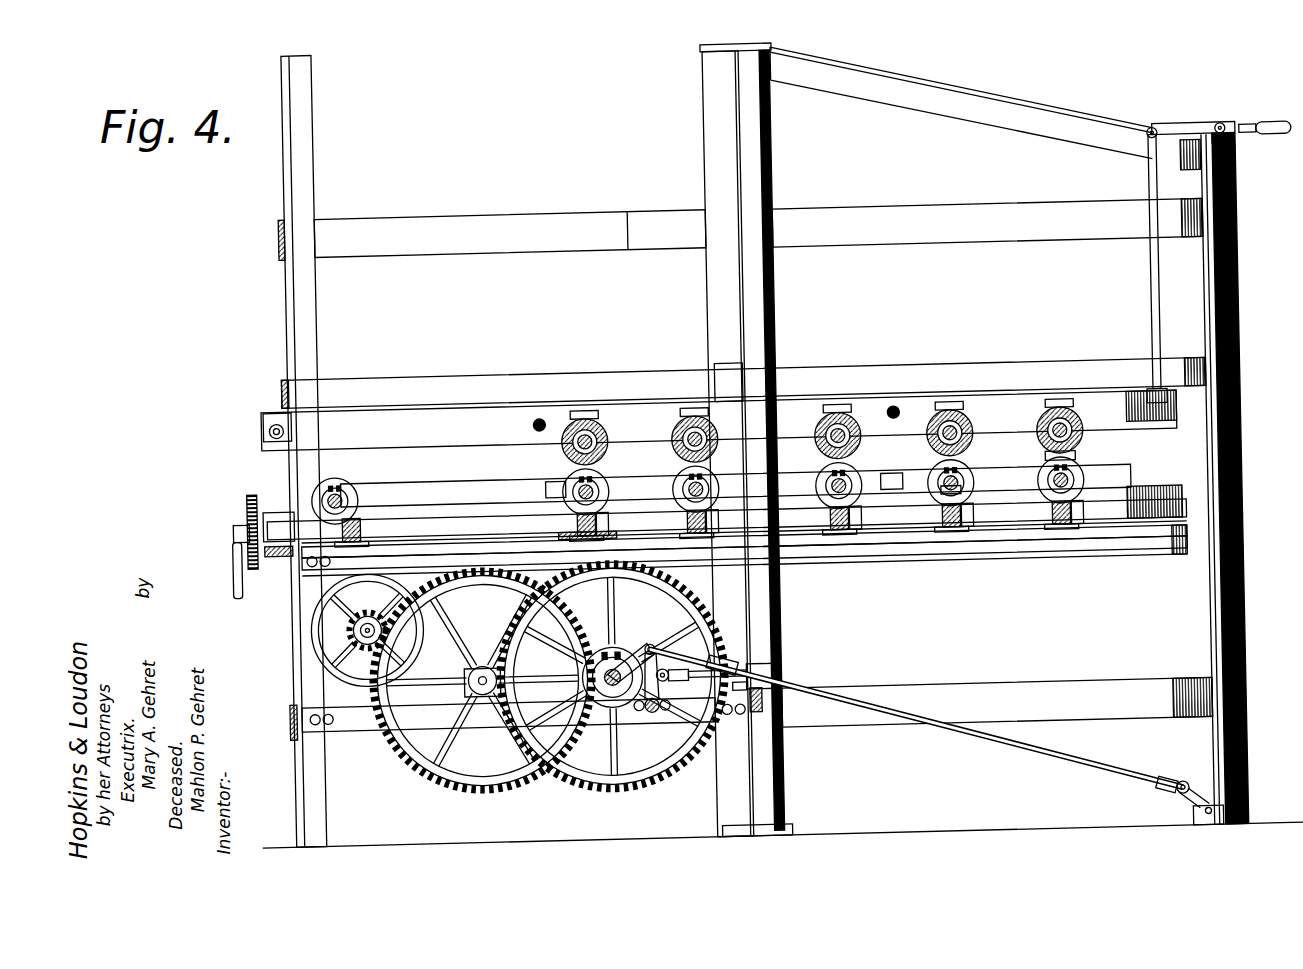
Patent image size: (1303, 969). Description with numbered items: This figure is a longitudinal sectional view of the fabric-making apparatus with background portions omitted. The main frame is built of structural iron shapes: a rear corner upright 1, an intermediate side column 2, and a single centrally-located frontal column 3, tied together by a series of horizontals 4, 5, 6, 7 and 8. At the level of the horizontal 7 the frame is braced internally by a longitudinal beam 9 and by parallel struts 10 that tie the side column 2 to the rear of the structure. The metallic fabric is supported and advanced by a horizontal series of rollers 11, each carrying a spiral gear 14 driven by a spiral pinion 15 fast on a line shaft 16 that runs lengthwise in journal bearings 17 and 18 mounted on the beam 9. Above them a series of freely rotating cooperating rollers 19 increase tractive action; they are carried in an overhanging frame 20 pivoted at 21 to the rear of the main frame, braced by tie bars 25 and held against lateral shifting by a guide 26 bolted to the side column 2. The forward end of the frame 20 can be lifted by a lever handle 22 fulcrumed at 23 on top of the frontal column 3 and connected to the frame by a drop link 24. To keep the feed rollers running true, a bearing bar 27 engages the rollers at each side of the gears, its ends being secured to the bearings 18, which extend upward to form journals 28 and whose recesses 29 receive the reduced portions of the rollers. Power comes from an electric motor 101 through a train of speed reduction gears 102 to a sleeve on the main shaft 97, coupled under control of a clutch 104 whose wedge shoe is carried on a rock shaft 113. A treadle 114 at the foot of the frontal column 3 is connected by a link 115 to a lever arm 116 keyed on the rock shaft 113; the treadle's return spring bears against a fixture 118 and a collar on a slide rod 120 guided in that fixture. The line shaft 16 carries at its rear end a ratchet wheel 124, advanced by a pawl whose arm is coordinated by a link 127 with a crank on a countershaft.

The rear corner upright 1 is at (305, 100).
The intermediate side column 2 is at (710, 82).
The frontal column 3 is at (1236, 281).
The horizontal 4 is at (953, 96).
The horizontal 5 is at (284, 236).
The horizontal 6 is at (288, 384).
The horizontal 7 is at (799, 494).
The horizontal 8 is at (297, 706).
The longitudinal beam 9 is at (1030, 559).
The parallel strut 10 is at (512, 213).
The roller 11 is at (600, 471).
The spiral gear 14 is at (680, 492).
The spiral pinion 15 is at (700, 538).
The line shaft 16 is at (569, 557).
The journal bearing 17 is at (357, 517).
The journal bearing 18 is at (600, 536).
The cooperating roller 19 is at (338, 480).
The overhanging frame 20 is at (428, 443).
The pivot 21 is at (270, 432).
The lever handle 22 is at (1250, 138).
The fulcrum 23 is at (1220, 126).
The drop link 24 is at (1151, 288).
The tie bar 25 is at (535, 431).
The guide 26 is at (735, 386).
The bearing bar 27 is at (560, 488).
The journal 28 is at (1066, 479).
The recess 29 is at (965, 491).
The main shaft 97 is at (611, 690).
The electric motor 101 is at (312, 633).
The speed reduction gear 102 is at (580, 671).
The clutch 104 is at (641, 645).
The rock shaft 113 is at (648, 712).
The treadle 114 is at (1250, 792).
The link 115 is at (990, 741).
The lever arm 116 is at (717, 656).
The fixture 118 is at (790, 680).
The slide rod 120 is at (670, 690).
The ratchet wheel 124 is at (247, 498).
The link 127 is at (233, 566).